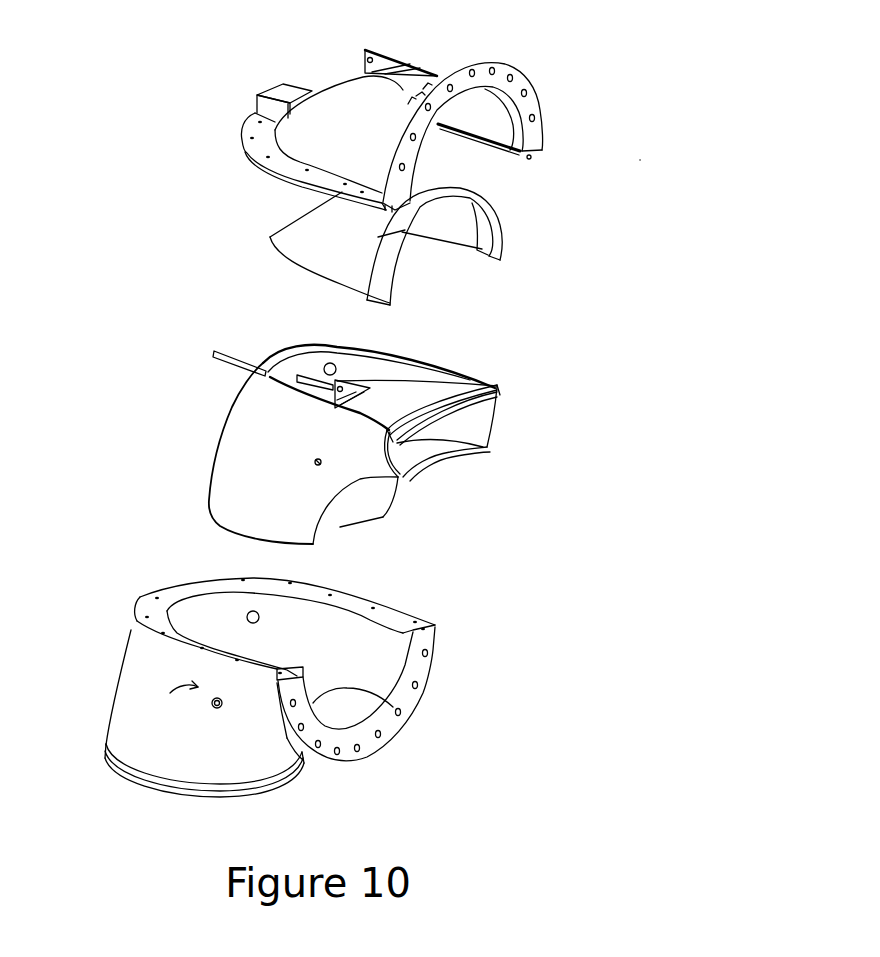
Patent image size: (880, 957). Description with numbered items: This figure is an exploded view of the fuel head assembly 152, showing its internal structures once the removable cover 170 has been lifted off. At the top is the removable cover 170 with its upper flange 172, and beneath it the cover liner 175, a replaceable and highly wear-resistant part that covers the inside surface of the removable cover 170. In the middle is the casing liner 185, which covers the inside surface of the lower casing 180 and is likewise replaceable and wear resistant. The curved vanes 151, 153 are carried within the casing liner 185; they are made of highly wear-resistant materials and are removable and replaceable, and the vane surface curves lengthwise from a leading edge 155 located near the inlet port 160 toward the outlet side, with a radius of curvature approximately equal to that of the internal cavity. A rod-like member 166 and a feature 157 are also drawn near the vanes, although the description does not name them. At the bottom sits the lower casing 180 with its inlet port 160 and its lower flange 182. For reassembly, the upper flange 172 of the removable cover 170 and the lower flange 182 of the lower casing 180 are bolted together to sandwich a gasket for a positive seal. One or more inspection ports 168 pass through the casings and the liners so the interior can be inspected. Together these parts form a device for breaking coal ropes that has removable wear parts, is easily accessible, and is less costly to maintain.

The fuel head assembly 152 is at (640, 160).
The removable cover 170 is at (350, 80).
The upper flange 172 is at (248, 157).
The cover liner 175 is at (504, 237).
The casing liner 185 is at (222, 440).
The curved vane 151 is at (500, 395).
The curved vane 153 is at (487, 448).
The rod 166 is at (242, 355).
The inspection port 168 is at (328, 364).
The leading edge 155 is at (315, 461).
The aperture edge 157 is at (316, 465).
The lower flange 182 is at (143, 600).
The lower casing 180 is at (118, 693).
The inlet port 160 is at (120, 777).